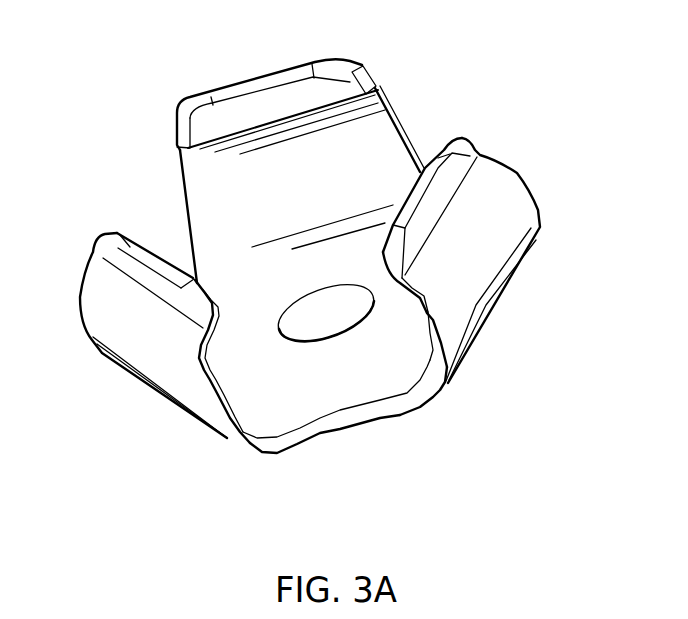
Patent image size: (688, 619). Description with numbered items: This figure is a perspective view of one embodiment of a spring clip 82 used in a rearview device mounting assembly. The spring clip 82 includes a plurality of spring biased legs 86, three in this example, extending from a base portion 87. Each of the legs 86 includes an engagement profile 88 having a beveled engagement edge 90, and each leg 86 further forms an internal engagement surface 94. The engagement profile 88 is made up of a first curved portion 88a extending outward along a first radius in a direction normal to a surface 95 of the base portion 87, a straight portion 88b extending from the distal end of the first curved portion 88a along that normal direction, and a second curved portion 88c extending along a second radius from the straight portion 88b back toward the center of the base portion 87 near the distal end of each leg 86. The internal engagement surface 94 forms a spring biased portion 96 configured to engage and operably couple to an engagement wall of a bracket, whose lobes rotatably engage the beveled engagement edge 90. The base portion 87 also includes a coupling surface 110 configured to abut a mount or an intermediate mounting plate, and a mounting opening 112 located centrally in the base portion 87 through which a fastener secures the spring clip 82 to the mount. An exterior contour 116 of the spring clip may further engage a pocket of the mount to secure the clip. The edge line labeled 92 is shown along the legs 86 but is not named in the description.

The spring clip 82 is at (552, 90).
The spring biased legs 86 is at (265, 82).
The base portion 87 is at (298, 399).
The engagement profile 88 is at (382, 377).
The first curved portion 88a is at (426, 397).
The straight portion 88b is at (432, 340).
The second curved portion 88c is at (429, 296).
The beveled engagement edge 90 is at (403, 273).
The flange edge 92 is at (425, 312).
The internal engagement surface 94 is at (314, 130).
The surface 95 is at (337, 270).
The spring biased portion 96 is at (180, 134).
The coupling surface 110 is at (341, 436).
The mounting opening 112 is at (290, 303).
The exterior contour 116 is at (404, 413).